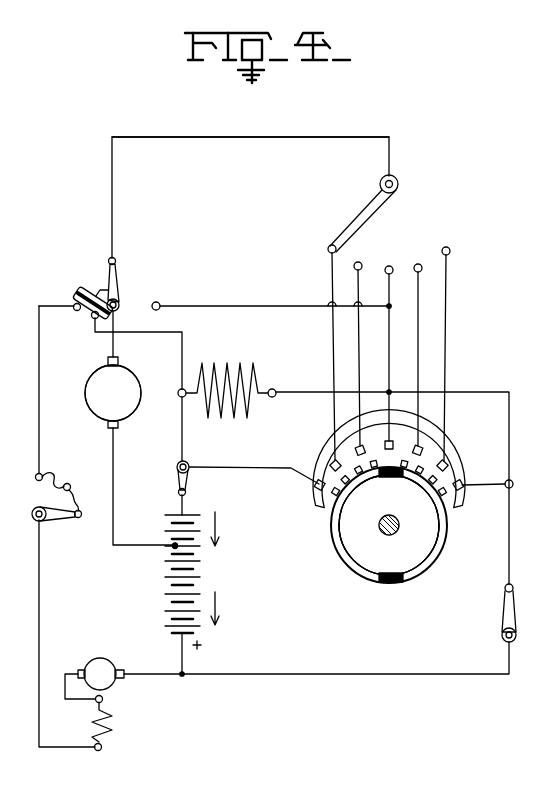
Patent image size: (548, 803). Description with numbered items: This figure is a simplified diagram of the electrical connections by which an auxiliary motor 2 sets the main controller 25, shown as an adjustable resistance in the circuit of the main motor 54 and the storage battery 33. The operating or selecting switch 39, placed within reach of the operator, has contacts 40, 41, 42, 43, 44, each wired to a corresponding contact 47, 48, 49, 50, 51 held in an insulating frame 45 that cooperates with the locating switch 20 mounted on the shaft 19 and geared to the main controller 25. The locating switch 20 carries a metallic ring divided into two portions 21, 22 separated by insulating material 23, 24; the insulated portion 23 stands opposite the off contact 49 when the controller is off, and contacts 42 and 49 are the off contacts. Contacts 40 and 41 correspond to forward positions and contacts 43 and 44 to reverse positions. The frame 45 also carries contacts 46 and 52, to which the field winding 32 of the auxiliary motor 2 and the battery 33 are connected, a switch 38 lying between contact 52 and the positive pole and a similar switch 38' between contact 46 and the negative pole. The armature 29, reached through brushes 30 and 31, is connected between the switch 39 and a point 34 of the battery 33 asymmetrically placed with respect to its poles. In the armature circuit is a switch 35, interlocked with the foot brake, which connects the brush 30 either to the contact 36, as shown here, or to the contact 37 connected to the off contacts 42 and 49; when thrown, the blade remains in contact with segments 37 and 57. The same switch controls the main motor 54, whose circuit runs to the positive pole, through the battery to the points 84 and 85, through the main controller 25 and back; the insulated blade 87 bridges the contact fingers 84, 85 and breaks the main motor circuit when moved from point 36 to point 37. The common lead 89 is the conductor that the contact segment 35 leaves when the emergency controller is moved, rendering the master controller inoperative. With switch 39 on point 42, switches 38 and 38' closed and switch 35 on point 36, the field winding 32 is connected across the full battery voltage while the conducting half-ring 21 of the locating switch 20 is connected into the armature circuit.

The auxiliary motor 2 is at (113, 393).
The shaft 19 is at (399, 525).
The locating switch 20 is at (389, 525).
The conducting half-ring 21 is at (344, 548).
The metallic ring portion 22 is at (446, 535).
The insulating material 23 is at (391, 477).
The insulating material 24 is at (391, 582).
The main controller 25 is at (70, 482).
The armature 29 is at (87, 396).
The brush 30 is at (118, 360).
The brush 31 is at (108, 426).
The field winding 32 is at (218, 370).
The storage battery 33 is at (165, 585).
The point of the battery 34 is at (175, 546).
The switch 35 is at (119, 282).
The contact 36 is at (116, 258).
The contact 37 is at (159, 302).
The switch 38 is at (522, 613).
The switch 38' is at (162, 482).
The operating or selecting switch 39 is at (372, 208).
The contact 40 is at (329, 252).
The contact 41 is at (356, 270).
The off contact 42 is at (387, 274).
The contact 43 is at (416, 272).
The contact 44 is at (445, 255).
The insulating frame 45 is at (320, 508).
The contact 46 is at (316, 481).
The contact 47 is at (337, 461).
The contact 48 is at (362, 446).
The off contact 49 is at (398, 432).
The contact 50 is at (420, 446).
The contact 51 is at (446, 461).
The contact 52 is at (462, 480).
The main motor 54 is at (101, 704).
The contact segment 57 is at (119, 309).
The contact finger 84 is at (93, 318).
The contact finger 85 is at (75, 310).
The blade 87 is at (80, 326).
The common lead 89 is at (244, 137).